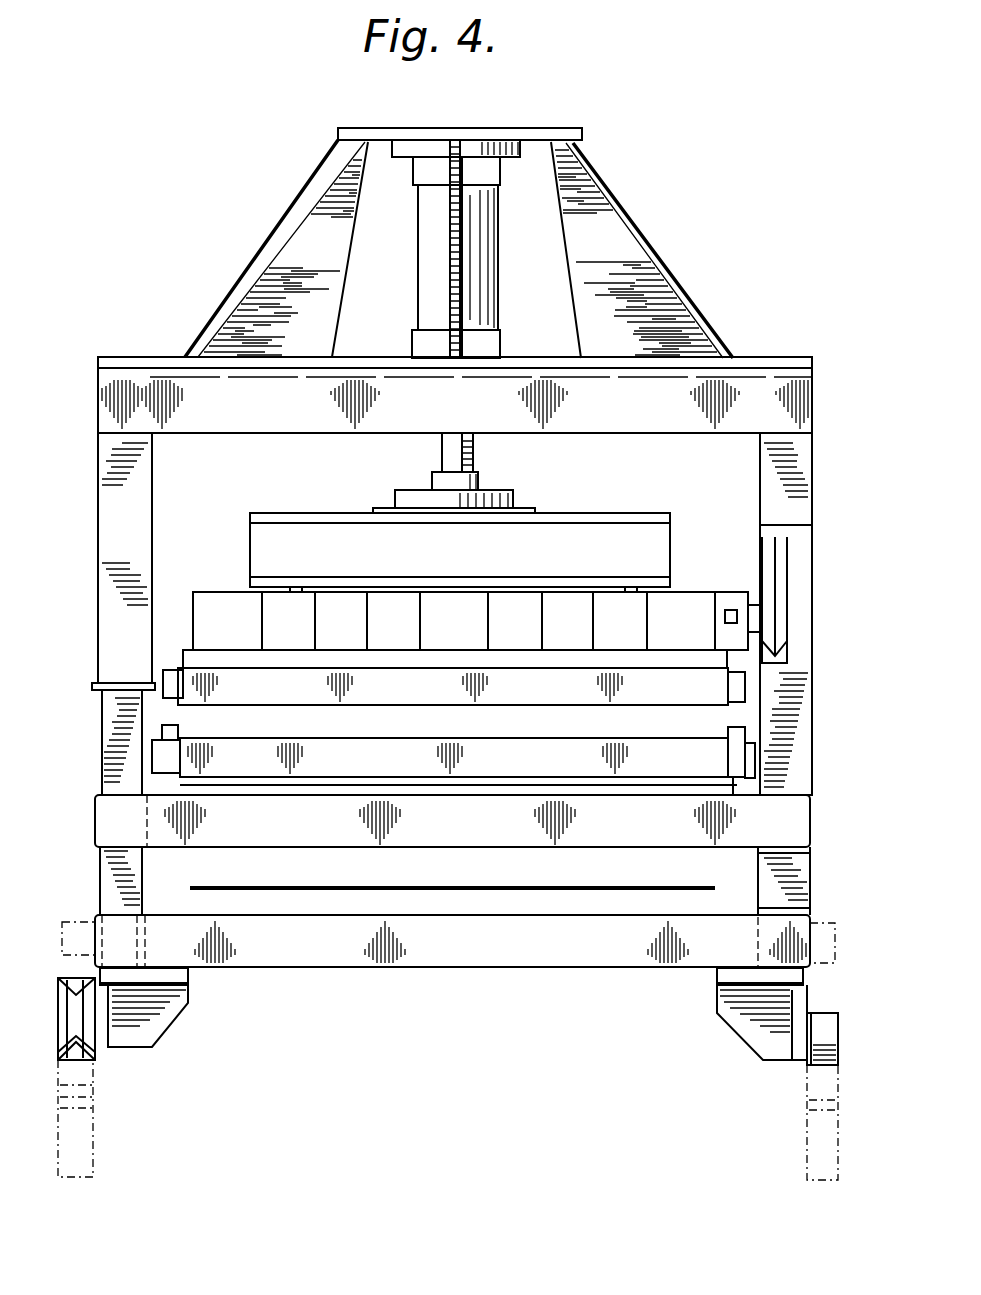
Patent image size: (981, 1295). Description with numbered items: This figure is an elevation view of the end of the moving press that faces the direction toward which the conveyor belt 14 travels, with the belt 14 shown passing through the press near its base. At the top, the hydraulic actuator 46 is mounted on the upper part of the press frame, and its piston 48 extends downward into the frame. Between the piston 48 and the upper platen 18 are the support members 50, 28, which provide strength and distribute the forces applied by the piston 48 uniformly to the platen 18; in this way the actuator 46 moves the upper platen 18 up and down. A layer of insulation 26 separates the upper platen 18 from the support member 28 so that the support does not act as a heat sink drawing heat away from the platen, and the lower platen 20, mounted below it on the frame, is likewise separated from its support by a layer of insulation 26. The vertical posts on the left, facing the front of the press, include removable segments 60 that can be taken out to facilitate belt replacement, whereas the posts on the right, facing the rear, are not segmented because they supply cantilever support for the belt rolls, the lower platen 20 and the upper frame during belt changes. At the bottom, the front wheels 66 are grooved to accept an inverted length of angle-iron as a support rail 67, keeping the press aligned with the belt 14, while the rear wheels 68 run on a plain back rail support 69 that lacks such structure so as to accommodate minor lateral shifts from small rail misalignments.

The endless conveyer belt 14 is at (425, 886).
The upper platen 18 is at (740, 688).
The lower platen 20 is at (755, 770).
The layer of insulation 26 is at (707, 663).
The support member 28 is at (688, 600).
The hydraulic actuator 46 is at (478, 248).
The piston 48 is at (460, 452).
The support member 50 is at (660, 545).
The removable segment 60 is at (113, 720).
The front wheel 66 is at (68, 1010).
The front support rail 67 is at (72, 1073).
The rear wheel 68 is at (825, 1033).
The back rail support 69 is at (838, 1157).